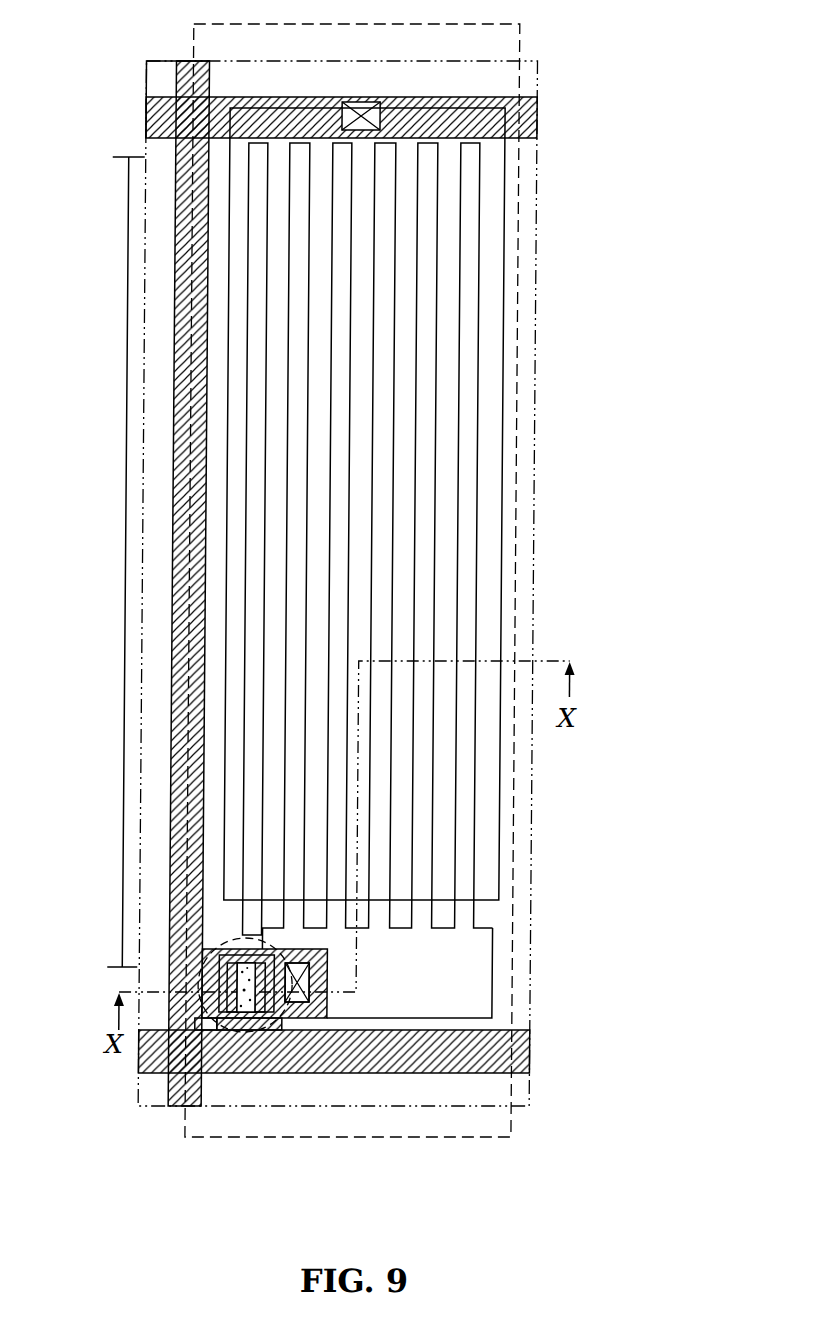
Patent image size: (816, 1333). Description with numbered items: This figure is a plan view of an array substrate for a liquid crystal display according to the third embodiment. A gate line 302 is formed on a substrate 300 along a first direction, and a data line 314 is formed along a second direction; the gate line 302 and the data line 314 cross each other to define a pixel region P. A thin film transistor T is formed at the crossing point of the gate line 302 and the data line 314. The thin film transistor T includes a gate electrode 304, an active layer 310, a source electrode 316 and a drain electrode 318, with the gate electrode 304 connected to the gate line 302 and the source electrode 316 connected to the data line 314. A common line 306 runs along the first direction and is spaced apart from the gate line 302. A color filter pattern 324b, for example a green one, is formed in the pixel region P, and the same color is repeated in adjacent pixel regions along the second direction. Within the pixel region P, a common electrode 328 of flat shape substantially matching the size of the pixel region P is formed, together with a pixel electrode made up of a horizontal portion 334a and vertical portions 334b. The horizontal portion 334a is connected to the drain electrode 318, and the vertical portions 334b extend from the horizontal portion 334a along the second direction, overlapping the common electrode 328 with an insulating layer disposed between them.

The substrate 300 is at (600, 1134).
The gate line 302 is at (536, 1055).
The gate electrode 304 is at (272, 968).
The common line 306 is at (536, 117).
The active layer 310 is at (261, 1019).
The data line 314 is at (179, 360).
The source electrode 316 is at (181, 968).
The drain electrode 318 is at (328, 975).
The color filter pattern 324b is at (520, 33).
The common electrode 328 is at (230, 235).
The horizontal portion of pixel electrode 334a is at (498, 987).
The vertical portions of pixel electrode 334b is at (486, 375).
The thin film transistor T is at (225, 978).
The pixel region P is at (125, 562).